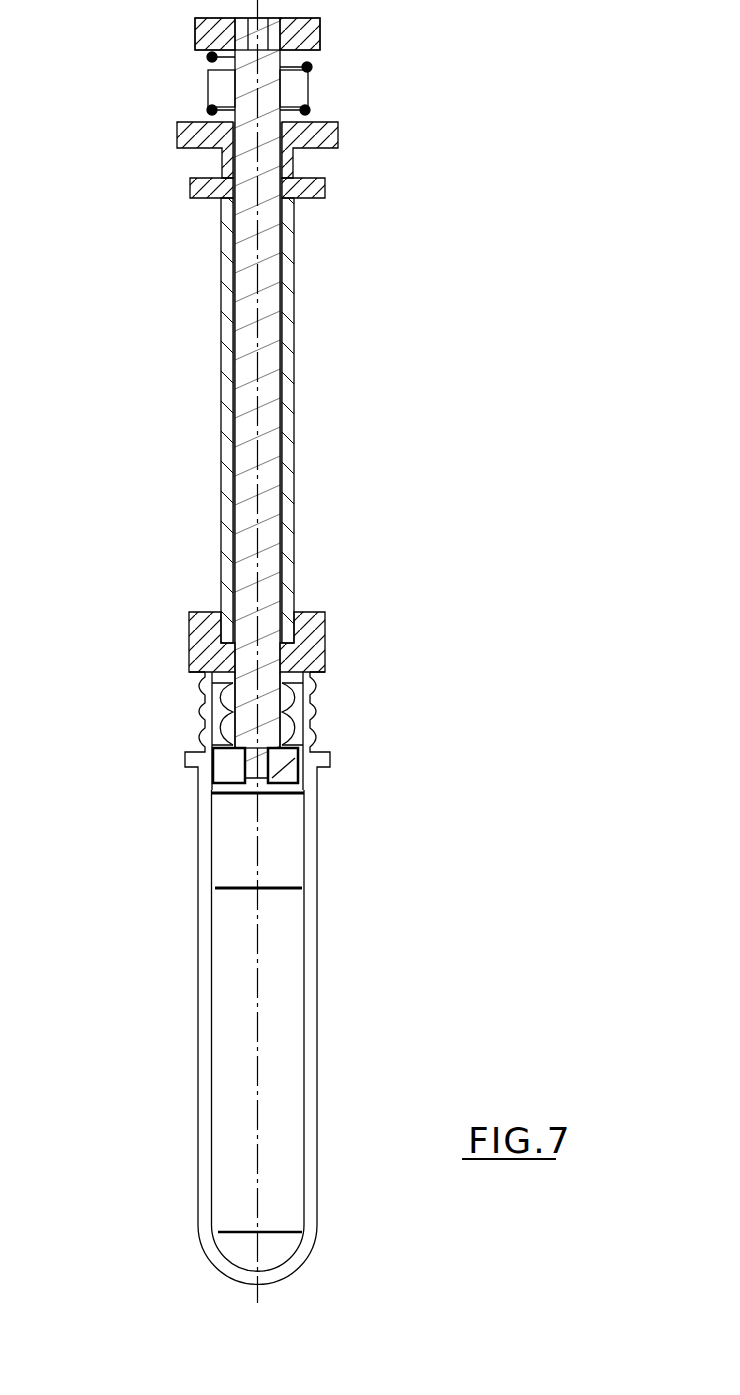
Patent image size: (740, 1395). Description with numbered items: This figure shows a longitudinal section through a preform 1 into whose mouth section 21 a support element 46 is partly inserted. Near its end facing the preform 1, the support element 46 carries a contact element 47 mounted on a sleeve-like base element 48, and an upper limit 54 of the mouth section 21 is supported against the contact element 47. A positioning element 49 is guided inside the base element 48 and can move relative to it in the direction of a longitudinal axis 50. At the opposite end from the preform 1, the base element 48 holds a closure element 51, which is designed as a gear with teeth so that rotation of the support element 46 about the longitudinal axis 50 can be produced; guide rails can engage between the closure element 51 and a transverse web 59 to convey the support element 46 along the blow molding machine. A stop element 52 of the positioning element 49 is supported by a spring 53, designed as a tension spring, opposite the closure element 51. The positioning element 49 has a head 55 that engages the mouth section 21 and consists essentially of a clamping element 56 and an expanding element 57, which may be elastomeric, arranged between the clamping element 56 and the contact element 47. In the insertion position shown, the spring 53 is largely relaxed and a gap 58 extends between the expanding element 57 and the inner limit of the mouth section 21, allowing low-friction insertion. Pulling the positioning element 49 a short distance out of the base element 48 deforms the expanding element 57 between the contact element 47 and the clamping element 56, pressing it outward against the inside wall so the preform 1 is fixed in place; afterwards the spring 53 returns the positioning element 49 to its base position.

The preform 1 is at (313, 1003).
The mouth section 21 is at (313, 732).
The support element 46 is at (333, 467).
The contact element 47 is at (325, 640).
The base element 48 is at (294, 313).
The positioning element 49 is at (263, 258).
The longitudinal axis 50 is at (281, 340).
The closure element 51 is at (177, 135).
The stop element 52 is at (320, 35).
The spring 53 is at (206, 58).
The upper limit 54 is at (207, 670).
The head 55 is at (245, 730).
The clamping element 56 is at (225, 772).
The expanding element 57 is at (217, 700).
The gap 58 is at (313, 700).
The transverse web 59 is at (325, 188).